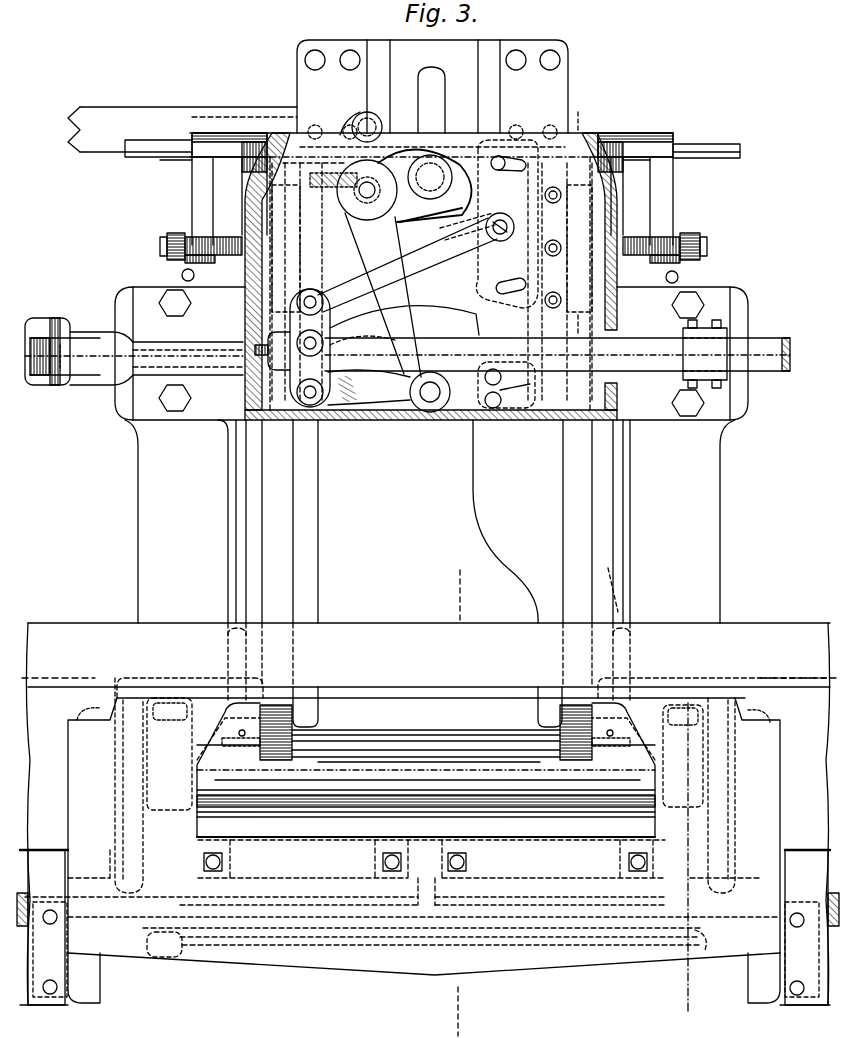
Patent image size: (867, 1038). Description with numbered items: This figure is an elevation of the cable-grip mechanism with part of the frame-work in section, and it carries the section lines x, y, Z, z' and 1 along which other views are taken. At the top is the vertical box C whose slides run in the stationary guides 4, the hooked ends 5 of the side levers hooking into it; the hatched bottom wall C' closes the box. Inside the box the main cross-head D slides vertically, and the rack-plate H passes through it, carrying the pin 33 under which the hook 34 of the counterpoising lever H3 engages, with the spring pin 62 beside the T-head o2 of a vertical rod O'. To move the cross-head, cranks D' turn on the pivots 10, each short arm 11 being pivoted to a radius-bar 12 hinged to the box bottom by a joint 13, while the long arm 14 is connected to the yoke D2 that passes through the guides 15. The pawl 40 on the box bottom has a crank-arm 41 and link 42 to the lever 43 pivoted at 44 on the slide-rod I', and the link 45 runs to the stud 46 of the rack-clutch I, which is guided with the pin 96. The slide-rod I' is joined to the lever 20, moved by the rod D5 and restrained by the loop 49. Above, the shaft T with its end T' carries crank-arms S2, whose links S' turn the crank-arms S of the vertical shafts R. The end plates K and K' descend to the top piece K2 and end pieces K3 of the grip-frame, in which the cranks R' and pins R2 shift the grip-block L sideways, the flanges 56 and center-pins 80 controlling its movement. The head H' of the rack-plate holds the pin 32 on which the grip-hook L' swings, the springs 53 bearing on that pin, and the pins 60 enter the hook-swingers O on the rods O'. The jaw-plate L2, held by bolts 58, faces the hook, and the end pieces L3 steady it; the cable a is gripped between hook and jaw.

The stationary guides 4 is at (408, 95).
The hook 34 is at (350, 122).
The section line x- x is at (577, 216).
The lever H3 is at (182, 129).
The shaft T is at (432, 139).
The end of crank-arm T' is at (404, 196).
The crank-arms S2 is at (683, 194).
The links S' is at (433, 233).
The crank-arms S is at (415, 262).
The box C is at (440, 271).
The casing bottom C' is at (431, 429).
The T-head o2 is at (432, 248).
The pin 62 is at (312, 185).
The main cross-head D is at (430, 258).
The pin 33 is at (367, 190).
The radius-bar 12 is at (383, 295).
The joints 13 is at (430, 392).
The pivots 10 is at (430, 177).
The short arm 11 is at (425, 185).
The cranks D' is at (431, 224).
The hooked ends 5 is at (446, 233).
The stud 46 is at (500, 222).
The rack-clutch I is at (428, 226).
The long arm 14 is at (428, 290).
The pin 96 is at (507, 231).
The link 45 is at (320, 301).
The lever 43 is at (310, 348).
The pivot 44 is at (278, 352).
The link 42 is at (353, 385).
The section line z-z Z is at (404, 327).
The yoke D2 is at (557, 354).
The pawl 40 is at (486, 368).
The crank-arm 41 is at (508, 386).
The slide-rod I' is at (156, 385).
The rod D5 is at (135, 340).
The loop 49 is at (110, 334).
The lever 20 is at (76, 370).
The guides 15 is at (705, 354).
The vertical end plate K is at (156, 521).
The vertical end plate K' is at (703, 521).
The rack-plate H is at (461, 521).
The vertical shafts R is at (430, 521).
The vertical rods O' is at (427, 521).
The section line z'- z' is at (457, 794).
The section line 1- 1 is at (690, 1025).
The top piece K2 is at (428, 814).
The section line y- y is at (431, 681).
The cranks R' is at (472, 675).
The grip-block L is at (424, 850).
The projecting flanges 56 is at (423, 980).
The center-pins 80 is at (97, 713).
The end pieces K3 is at (425, 879).
The cable a is at (24, 893).
The vertical pins R2 is at (425, 785).
The springs 53 is at (425, 754).
The grip-hook L' is at (426, 851).
The hook-swingers O is at (426, 723).
The pins 60 is at (230, 745).
The head H' is at (426, 760).
The pin 32 is at (372, 774).
The bolts 58 is at (222, 862).
The jaw-plate L2 is at (315, 910).
The end pieces L3 is at (700, 968).